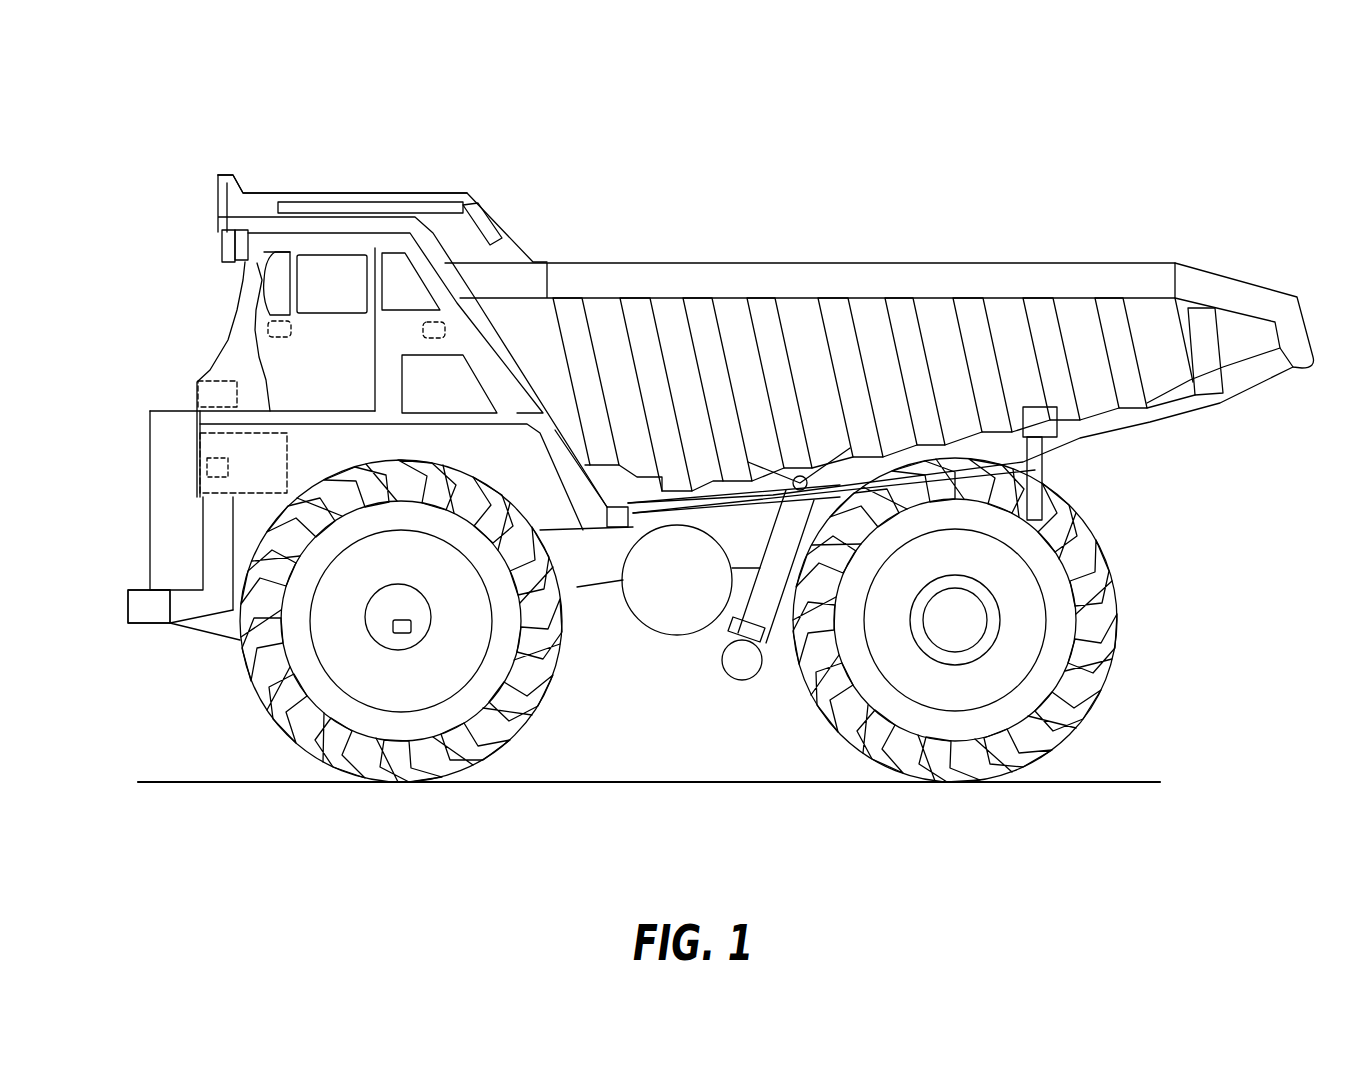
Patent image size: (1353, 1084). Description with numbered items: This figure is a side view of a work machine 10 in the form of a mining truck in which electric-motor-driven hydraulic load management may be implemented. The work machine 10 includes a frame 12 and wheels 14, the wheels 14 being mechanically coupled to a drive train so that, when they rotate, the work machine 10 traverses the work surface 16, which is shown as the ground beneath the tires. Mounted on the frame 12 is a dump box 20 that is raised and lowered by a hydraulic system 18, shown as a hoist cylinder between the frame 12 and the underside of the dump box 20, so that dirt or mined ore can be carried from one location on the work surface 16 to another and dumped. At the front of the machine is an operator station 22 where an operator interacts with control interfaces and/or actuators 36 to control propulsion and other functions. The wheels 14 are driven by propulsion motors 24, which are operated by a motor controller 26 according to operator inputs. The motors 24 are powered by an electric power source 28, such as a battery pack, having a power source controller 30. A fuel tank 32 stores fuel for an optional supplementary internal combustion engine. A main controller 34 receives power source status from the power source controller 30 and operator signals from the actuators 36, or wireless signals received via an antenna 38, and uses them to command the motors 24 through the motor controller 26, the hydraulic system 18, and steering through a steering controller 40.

The work machine 10 is at (1205, 105).
The frame 12 is at (585, 578).
The wheels 14 is at (270, 698).
The work surface 16 is at (170, 787).
The hydraulic system 18 is at (772, 632).
The dump box 20 is at (925, 270).
The operator station 22 is at (231, 308).
The propulsion motors 24 is at (378, 612).
The motor controller 26 is at (408, 632).
The electric power source 28 is at (200, 457).
The power source controller 30 is at (205, 495).
The fuel tank 32 is at (660, 620).
The main controller 34 is at (210, 393).
The control interfaces and/or actuators 36 is at (287, 333).
The antenna 38 is at (255, 187).
The steering controller 40 is at (447, 322).